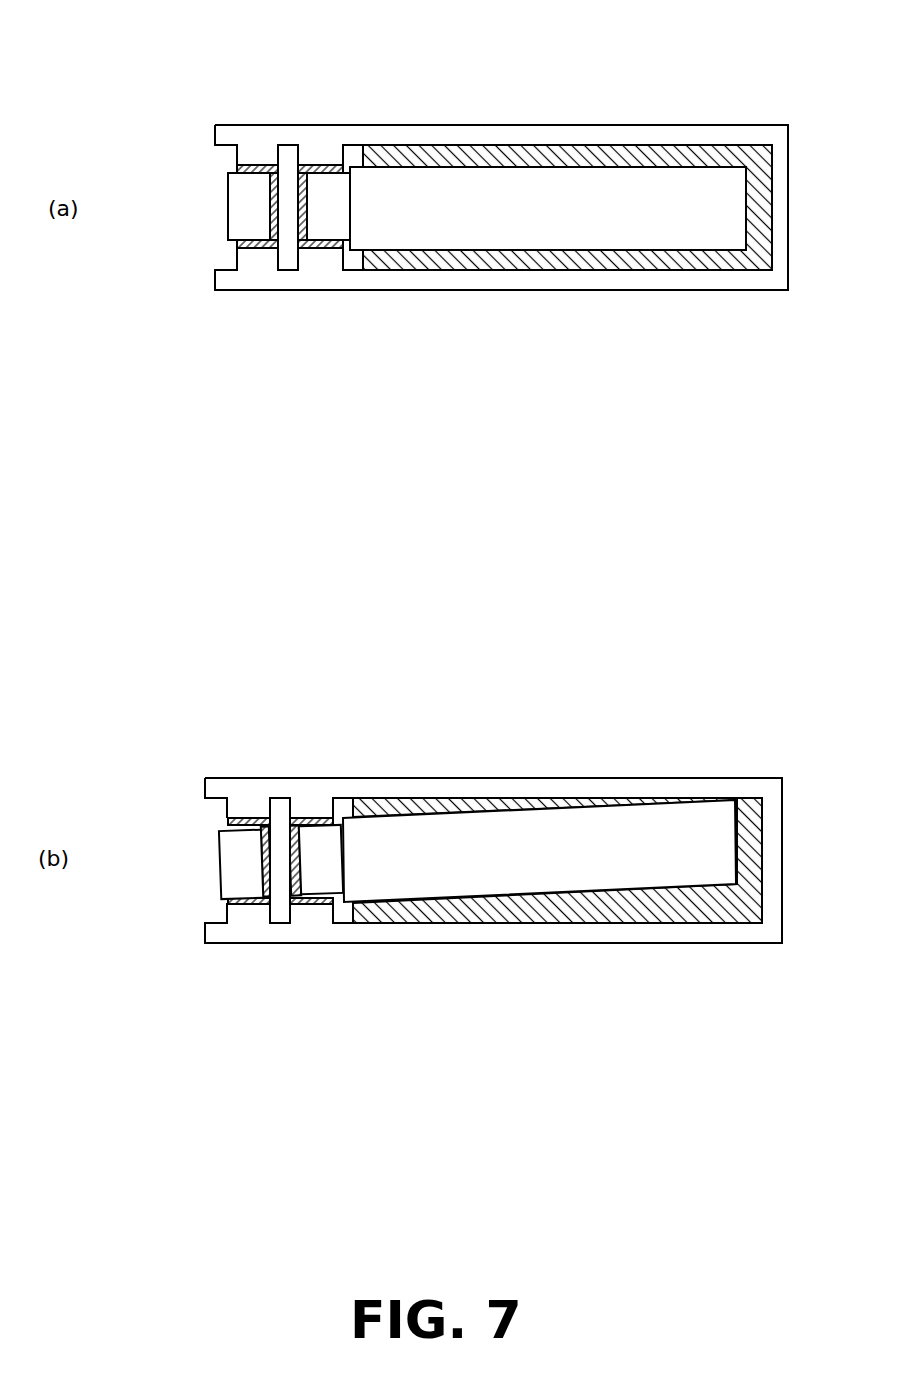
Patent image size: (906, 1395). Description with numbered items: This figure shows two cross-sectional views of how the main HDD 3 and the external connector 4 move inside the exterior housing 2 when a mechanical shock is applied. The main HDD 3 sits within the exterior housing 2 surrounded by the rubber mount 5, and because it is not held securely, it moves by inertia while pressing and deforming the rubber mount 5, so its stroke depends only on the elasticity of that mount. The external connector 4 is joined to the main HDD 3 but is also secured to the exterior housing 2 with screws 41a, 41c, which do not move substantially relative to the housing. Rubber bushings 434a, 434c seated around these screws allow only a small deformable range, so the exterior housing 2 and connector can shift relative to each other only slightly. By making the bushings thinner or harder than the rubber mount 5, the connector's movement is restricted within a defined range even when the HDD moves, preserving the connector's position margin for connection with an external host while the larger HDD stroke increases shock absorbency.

The exterior housing 2 is at (550, 125).
The main HDD 3 is at (352, 252).
The external connector 4 is at (251, 210).
The rubber mount 5 is at (350, 162).
The screw 41a is at (285, 145).
The screw 41c is at (283, 270).
The rubber bushing 434a is at (237, 165).
The rubber bushing 434c is at (237, 248).